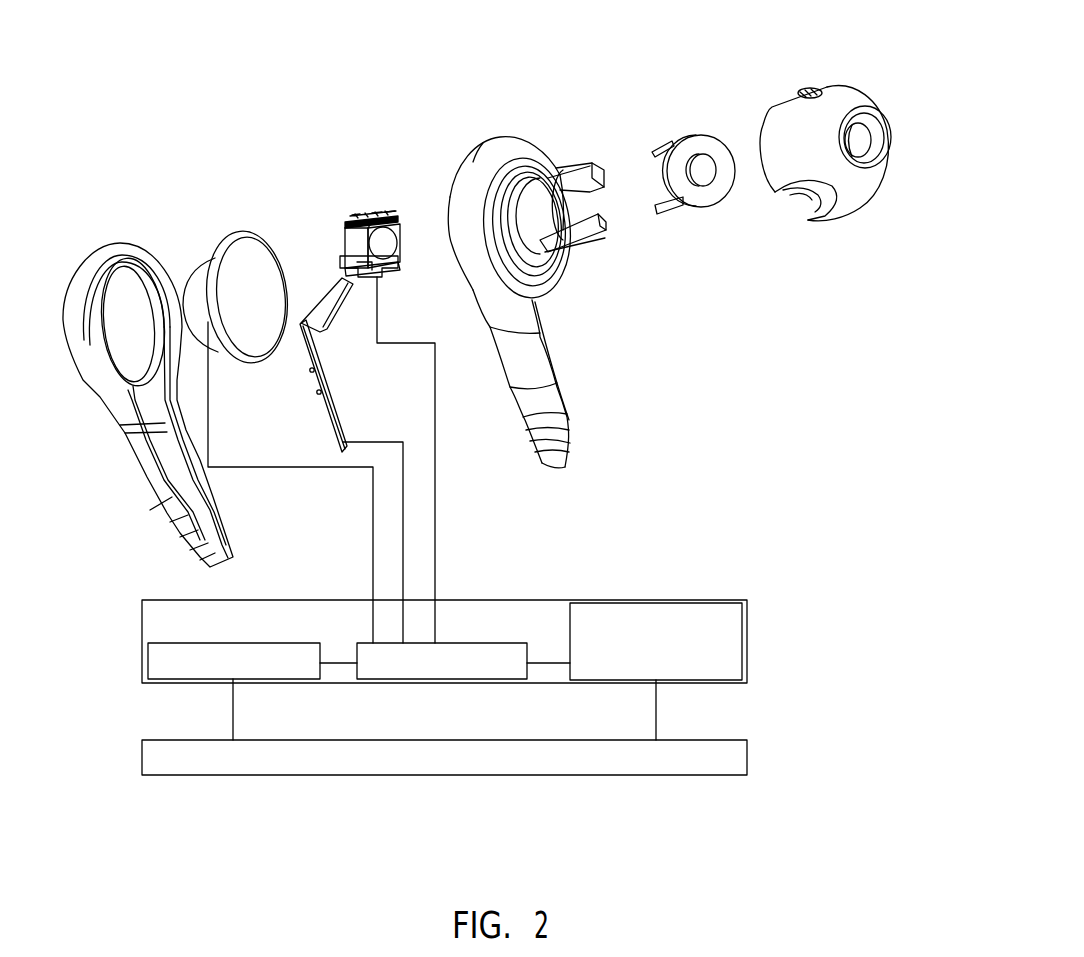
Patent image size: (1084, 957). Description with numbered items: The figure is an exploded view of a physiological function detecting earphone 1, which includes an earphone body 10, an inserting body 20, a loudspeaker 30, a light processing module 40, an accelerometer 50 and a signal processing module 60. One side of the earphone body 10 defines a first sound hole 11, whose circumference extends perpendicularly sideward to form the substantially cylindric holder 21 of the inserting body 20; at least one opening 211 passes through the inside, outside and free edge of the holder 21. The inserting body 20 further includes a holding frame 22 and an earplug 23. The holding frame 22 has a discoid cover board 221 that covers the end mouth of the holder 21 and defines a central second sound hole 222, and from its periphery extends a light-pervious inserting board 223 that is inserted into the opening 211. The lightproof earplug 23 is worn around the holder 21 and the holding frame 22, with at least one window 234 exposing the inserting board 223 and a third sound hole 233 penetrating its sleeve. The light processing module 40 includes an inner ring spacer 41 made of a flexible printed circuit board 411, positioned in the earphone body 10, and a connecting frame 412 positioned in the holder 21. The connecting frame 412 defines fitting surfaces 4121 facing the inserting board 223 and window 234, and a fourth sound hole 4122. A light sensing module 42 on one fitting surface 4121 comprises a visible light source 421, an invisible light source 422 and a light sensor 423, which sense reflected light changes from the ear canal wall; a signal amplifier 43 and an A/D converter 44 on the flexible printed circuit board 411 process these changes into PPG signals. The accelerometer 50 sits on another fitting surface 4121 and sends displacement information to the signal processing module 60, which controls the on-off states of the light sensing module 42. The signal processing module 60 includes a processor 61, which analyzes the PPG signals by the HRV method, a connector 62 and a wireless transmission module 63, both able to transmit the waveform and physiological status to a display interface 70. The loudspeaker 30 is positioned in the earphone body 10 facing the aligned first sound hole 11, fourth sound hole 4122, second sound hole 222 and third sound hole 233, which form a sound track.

The physiological function detecting earphone 1 is at (172, 57).
The earphone body 10 is at (544, 278).
The first sound hole 11 is at (566, 266).
The inserting body 20 is at (756, 133).
The holder 21 is at (578, 195).
The opening 211 is at (597, 206).
The holding frame 22 is at (708, 176).
The cover board 221 is at (712, 202).
The second sound hole 222 is at (710, 180).
The inserting board 223 is at (659, 146).
The earplug 23 is at (852, 131).
The third sound hole 233 is at (886, 138).
The window 234 is at (807, 90).
The loudspeaker 30 is at (241, 244).
The light processing module 40 is at (337, 460).
The inner ring spacer 41 is at (398, 273).
The flexible printed circuit board 411 is at (323, 394).
The connecting frame 412 is at (346, 290).
The fitting surface 4121 is at (397, 262).
The fourth sound hole 4122 is at (387, 243).
The light sensing module 42 is at (338, 176).
The visible light source 421 is at (373, 216).
The invisible light source 422 is at (390, 218).
The light sensor 423 is at (380, 218).
The signal amplifier 43 is at (313, 373).
The A/D converter 44 is at (315, 393).
The accelerometer 50 is at (348, 277).
The signal processing module 60 is at (444, 633).
The processor 61 is at (438, 681).
The connector 62 is at (174, 681).
The wireless transmission module 63 is at (592, 682).
The display interface 70 is at (435, 777).